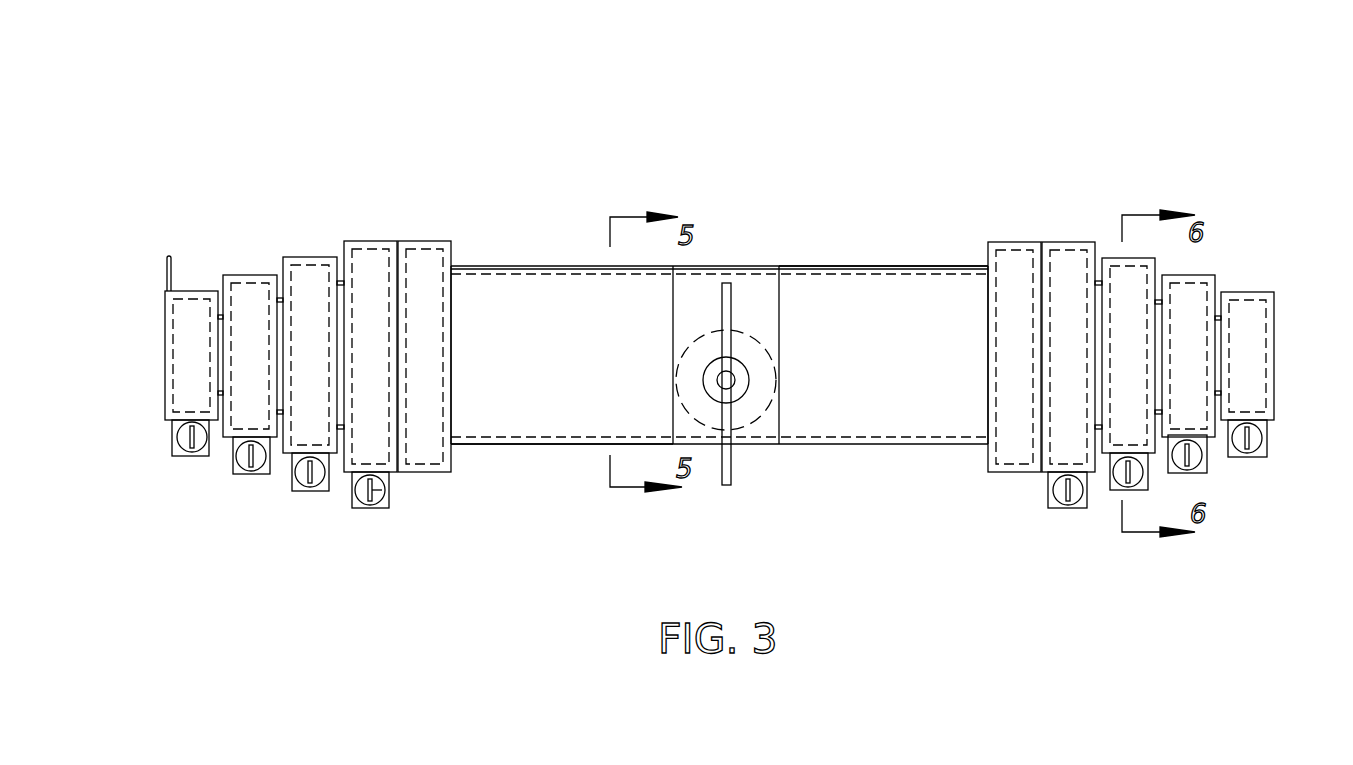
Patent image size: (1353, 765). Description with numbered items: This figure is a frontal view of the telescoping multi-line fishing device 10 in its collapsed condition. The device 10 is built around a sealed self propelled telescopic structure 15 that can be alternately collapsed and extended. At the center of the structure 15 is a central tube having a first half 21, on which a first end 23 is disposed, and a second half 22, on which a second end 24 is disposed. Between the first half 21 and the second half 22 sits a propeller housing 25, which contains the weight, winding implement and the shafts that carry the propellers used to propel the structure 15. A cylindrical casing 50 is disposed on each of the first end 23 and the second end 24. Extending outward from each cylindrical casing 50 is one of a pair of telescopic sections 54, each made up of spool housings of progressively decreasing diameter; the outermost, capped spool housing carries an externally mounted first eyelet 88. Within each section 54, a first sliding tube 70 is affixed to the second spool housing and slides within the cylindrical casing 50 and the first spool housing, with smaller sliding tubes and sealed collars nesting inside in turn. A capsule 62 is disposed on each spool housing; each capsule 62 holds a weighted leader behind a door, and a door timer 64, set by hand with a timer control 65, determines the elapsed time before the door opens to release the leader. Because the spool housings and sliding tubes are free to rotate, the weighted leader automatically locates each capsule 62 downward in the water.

The telescoping multi-line fishing device 10 is at (877, 188).
The sealed self propelled telescopic structure 15 is at (546, 263).
The first half 21 is at (501, 444).
The second half 22 is at (827, 266).
The first end 23 is at (452, 266).
The second end 24 is at (986, 266).
The propeller housing 25 is at (734, 266).
The cylindrical casing 50 is at (410, 241).
The telescopic section 54 is at (350, 232).
The capsule 62 is at (174, 432).
The door timer 64 is at (183, 448).
The timer control 65 is at (308, 482).
The first sliding tube 70 is at (518, 275).
The first eyelet 88 is at (165, 262).